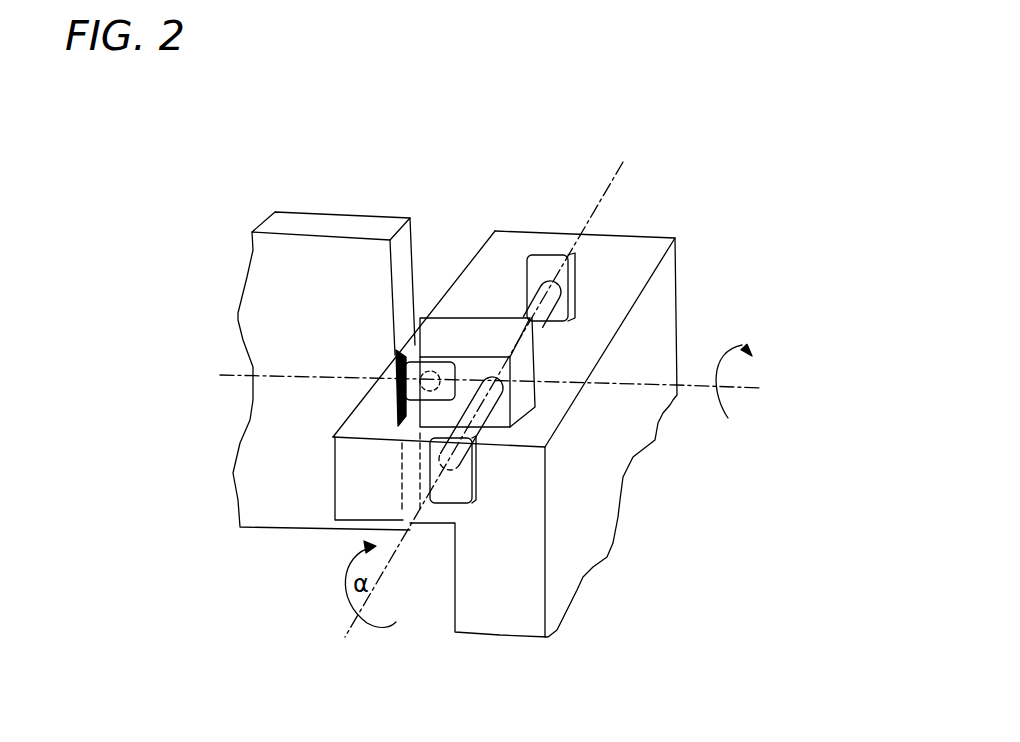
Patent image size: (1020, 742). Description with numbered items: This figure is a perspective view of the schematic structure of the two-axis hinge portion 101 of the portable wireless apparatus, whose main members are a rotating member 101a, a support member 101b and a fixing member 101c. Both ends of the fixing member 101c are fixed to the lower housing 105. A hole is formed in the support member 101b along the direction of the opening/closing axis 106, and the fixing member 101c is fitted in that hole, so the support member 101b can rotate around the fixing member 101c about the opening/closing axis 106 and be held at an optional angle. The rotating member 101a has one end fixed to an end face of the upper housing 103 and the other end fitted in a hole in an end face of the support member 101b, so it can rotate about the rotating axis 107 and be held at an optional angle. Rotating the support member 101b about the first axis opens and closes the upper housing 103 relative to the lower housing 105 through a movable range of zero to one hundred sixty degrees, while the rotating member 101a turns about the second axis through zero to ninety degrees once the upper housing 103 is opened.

The two-axis hinge portion 101 is at (434, 347).
The rotating member 101a is at (370, 395).
The support member 101b is at (462, 337).
The fixing member 101c is at (480, 427).
The upper housing 103 is at (338, 224).
The lower housing 105 is at (655, 313).
The opening/closing axis 106 is at (612, 188).
The rotating axis 107 is at (748, 389).